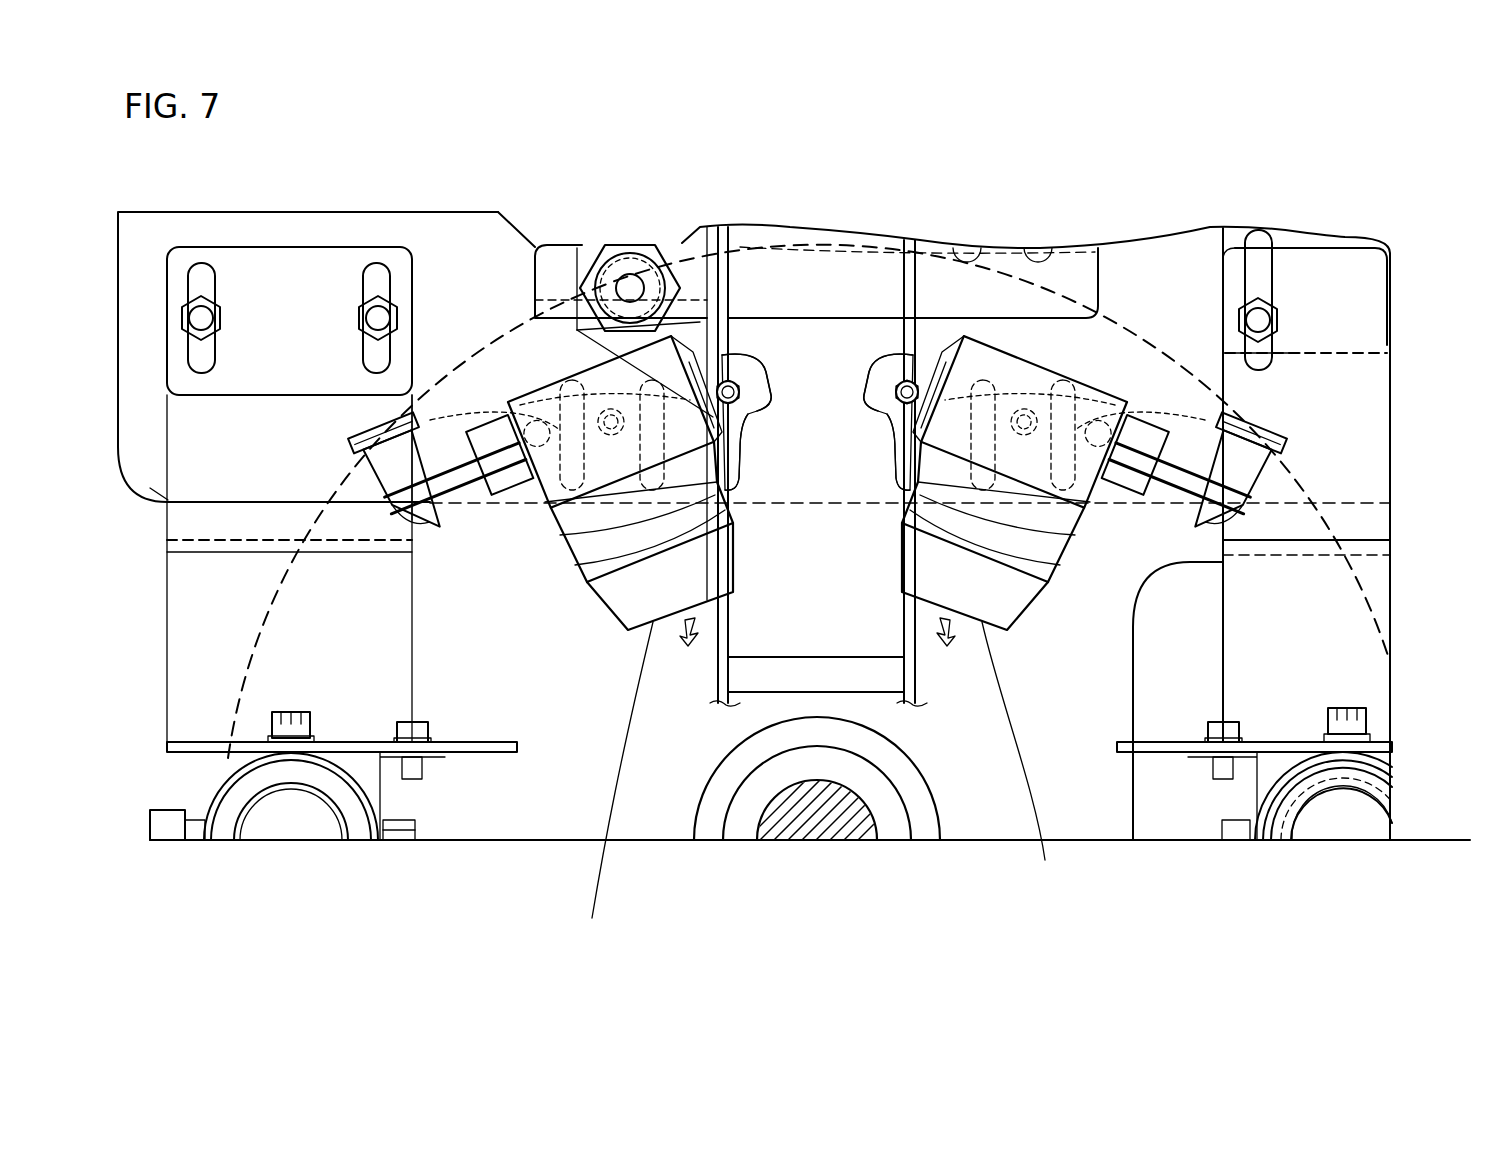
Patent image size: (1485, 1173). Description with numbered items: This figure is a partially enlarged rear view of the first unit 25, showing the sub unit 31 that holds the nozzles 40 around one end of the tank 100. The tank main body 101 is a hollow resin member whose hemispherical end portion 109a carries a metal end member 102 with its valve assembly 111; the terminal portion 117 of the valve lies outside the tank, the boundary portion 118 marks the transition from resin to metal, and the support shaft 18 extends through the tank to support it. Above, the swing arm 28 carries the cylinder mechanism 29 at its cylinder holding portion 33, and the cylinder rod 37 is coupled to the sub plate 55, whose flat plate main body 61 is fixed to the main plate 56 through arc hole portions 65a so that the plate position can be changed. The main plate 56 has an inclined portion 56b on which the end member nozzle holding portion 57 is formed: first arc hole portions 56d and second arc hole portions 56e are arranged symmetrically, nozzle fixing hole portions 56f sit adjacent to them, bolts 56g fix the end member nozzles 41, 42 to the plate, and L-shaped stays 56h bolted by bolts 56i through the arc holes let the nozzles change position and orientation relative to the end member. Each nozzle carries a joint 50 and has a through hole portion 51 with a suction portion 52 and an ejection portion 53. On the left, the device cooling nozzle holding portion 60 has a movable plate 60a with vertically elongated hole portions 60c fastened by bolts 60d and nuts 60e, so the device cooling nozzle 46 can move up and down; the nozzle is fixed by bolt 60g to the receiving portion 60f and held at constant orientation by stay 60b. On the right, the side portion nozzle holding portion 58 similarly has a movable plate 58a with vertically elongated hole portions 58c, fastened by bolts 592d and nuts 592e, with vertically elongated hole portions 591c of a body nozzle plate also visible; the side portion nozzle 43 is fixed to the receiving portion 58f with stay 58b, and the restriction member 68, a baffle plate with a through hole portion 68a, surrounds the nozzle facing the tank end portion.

The first unit 25 is at (1350, 172).
The sub unit 31 is at (1352, 237).
The main plate 56 is at (320, 222).
The device cooling nozzle holding portion 60 is at (167, 688).
The vertically elongated hole portions 60c is at (190, 360).
The bolts 60d is at (358, 376).
The nuts 60e is at (380, 315).
The movable plate 60a is at (407, 695).
The stay 60b is at (422, 778).
The receiving portion 60f is at (518, 747).
The bolt 60g is at (292, 712).
The joint 50 is at (412, 425).
The sub plate 55 is at (527, 262).
The cylinder holding portion 33 is at (560, 275).
The cylinder mechanism 29 is at (628, 268).
The cylinder rod 37 is at (634, 285).
The end member nozzle holding portion 57 is at (938, 338).
The flat plate main body 61 is at (1158, 245).
The arc hole portions 65a is at (1040, 252).
The vertically elongated hole portions 591c is at (1258, 238).
The bolts 592d is at (1280, 300).
The nuts 592e is at (1280, 320).
The vertically elongated hole portions 58c is at (1275, 362).
The side portion nozzle holding portion 58 is at (1373, 707).
The movable plate 58a is at (1233, 663).
The stay 58b is at (1255, 790).
The receiving portion 58f is at (1392, 748).
The inclined portion 56b is at (152, 490).
The first arc hole portions 56d is at (568, 520).
The second arc hole portions 56e is at (1067, 520).
The nozzle fixing hole portions 56f is at (487, 500).
The bolts 56g is at (443, 528).
The stays 56h is at (864, 397).
The bolts 56i is at (887, 418).
The ejection portion 53 is at (357, 833).
The nozzles 40 is at (243, 796).
The device cooling nozzle 46 is at (217, 803).
The end member nozzle 41 is at (614, 793).
The end member nozzle 42 is at (1035, 754).
The side portion nozzle 43 is at (1390, 790).
The through hole portion 51 is at (340, 822).
The suction portion 52 is at (1283, 843).
The tank 100 is at (527, 822).
The tank main body 101 is at (558, 842).
The end portion 109a is at (683, 830).
The end member 102 is at (707, 842).
The valve assembly 111 is at (740, 842).
The support shaft 18 is at (822, 842).
The terminal portion 117 is at (930, 842).
The boundary portion 118 is at (897, 835).
The swing arm 28 is at (975, 842).
The restriction member 68 is at (1133, 805).
The through hole portion 68a is at (1360, 770).